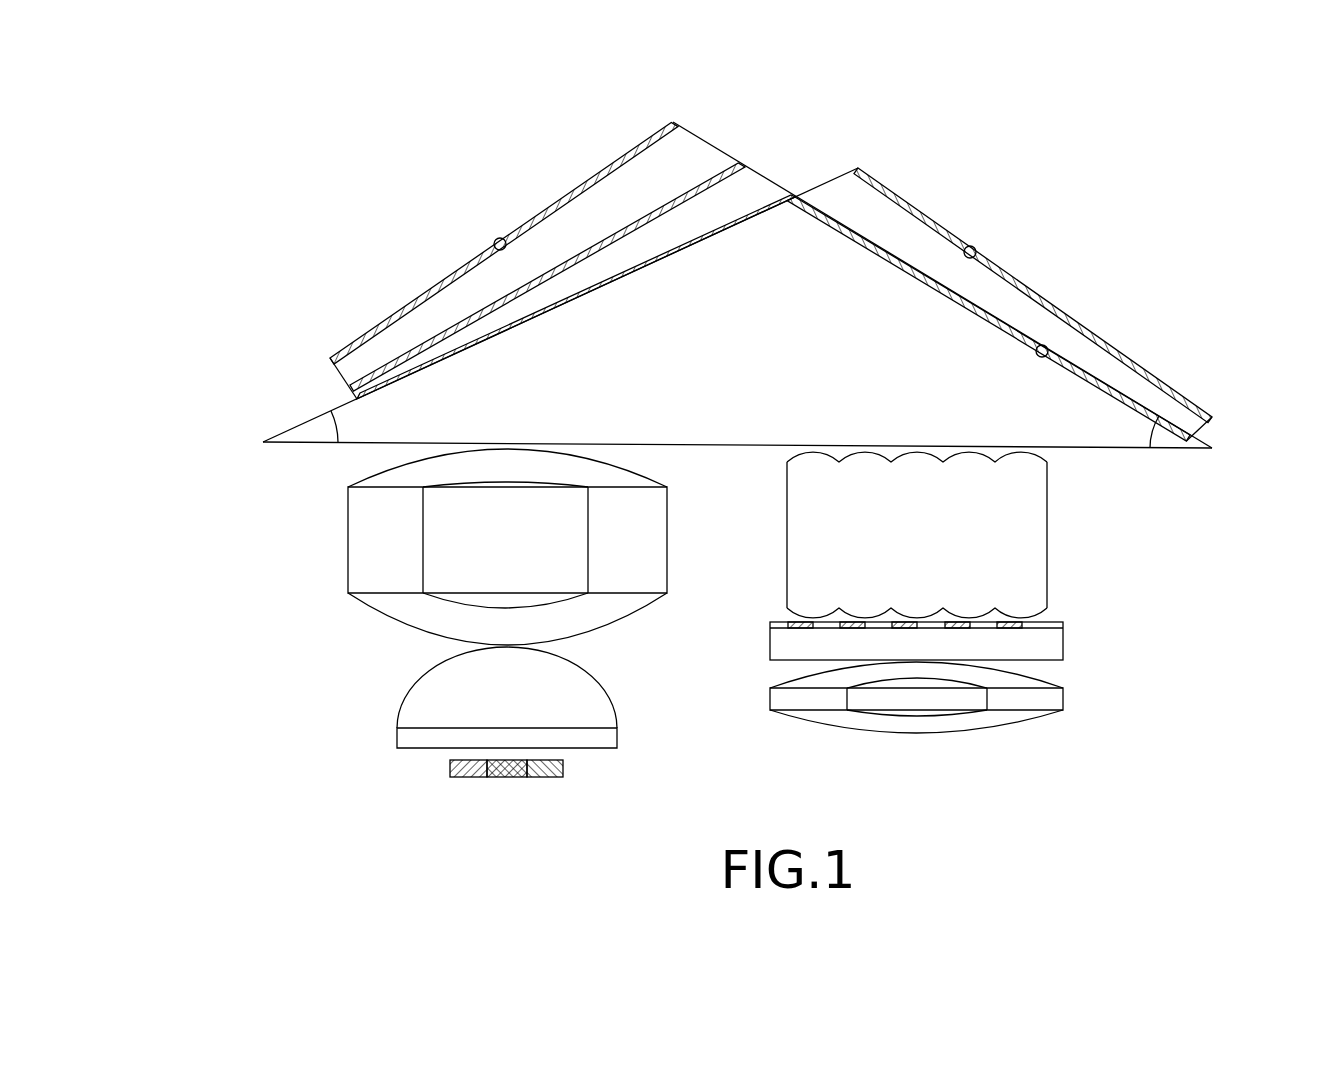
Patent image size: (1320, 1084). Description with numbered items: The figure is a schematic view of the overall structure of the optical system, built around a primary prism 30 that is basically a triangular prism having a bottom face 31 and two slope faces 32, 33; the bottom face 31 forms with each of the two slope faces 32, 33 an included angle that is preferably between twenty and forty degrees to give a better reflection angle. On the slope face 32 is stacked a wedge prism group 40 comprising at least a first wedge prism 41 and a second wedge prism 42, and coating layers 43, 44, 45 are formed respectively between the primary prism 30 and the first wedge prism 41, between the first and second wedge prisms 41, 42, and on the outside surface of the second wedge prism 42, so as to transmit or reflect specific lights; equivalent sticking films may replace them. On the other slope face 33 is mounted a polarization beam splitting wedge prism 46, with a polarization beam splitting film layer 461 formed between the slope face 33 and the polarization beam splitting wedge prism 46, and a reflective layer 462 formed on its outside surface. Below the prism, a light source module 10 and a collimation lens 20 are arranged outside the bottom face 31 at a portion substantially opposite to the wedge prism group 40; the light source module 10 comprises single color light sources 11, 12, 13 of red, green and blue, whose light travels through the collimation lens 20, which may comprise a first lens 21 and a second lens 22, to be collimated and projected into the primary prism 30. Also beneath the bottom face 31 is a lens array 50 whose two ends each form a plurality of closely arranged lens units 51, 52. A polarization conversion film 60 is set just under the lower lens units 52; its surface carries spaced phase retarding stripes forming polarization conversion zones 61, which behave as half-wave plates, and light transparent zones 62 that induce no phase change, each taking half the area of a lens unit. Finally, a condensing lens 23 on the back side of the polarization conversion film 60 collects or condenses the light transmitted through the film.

The light source module 10 is at (573, 857).
The single color light source 11 is at (465, 780).
The single color light source 12 is at (505, 780).
The single color light source 13 is at (540, 780).
The collimation lens 20 is at (268, 532).
The first lens 21 is at (413, 703).
The second lens 22 is at (370, 545).
The condensing lens 23 is at (1053, 702).
The primary prism 30 is at (240, 405).
The bottom face 31 is at (1165, 450).
The slope face 32 is at (312, 412).
The slope face 33 is at (1143, 400).
The wedge prism group 40 is at (690, 103).
The first wedge prism 41 is at (692, 215).
The second wedge prism 42 is at (586, 202).
The coating layer 43 is at (413, 375).
The coating layer 44 is at (457, 323).
The coating layer 45 is at (503, 238).
The polarization beam splitting wedge prism 46 is at (866, 201).
The polarization beam splitting film layer 461 is at (1044, 345).
The reflective layer 462 is at (970, 248).
The lens array 50 is at (1030, 510).
The lens units 51 is at (810, 458).
The lens units 52 is at (812, 612).
The polarization conversion film 60 is at (1053, 650).
The polarization conversion zones 61 is at (1022, 622).
The light transparent zone 62 is at (980, 626).